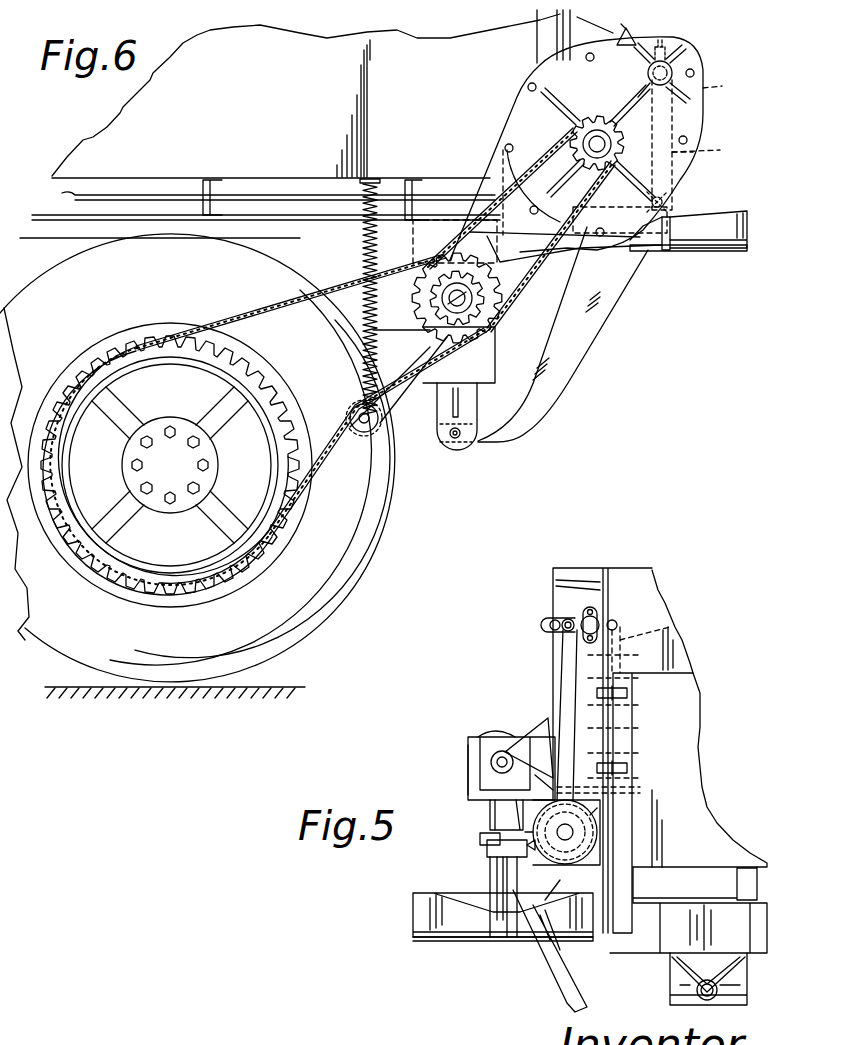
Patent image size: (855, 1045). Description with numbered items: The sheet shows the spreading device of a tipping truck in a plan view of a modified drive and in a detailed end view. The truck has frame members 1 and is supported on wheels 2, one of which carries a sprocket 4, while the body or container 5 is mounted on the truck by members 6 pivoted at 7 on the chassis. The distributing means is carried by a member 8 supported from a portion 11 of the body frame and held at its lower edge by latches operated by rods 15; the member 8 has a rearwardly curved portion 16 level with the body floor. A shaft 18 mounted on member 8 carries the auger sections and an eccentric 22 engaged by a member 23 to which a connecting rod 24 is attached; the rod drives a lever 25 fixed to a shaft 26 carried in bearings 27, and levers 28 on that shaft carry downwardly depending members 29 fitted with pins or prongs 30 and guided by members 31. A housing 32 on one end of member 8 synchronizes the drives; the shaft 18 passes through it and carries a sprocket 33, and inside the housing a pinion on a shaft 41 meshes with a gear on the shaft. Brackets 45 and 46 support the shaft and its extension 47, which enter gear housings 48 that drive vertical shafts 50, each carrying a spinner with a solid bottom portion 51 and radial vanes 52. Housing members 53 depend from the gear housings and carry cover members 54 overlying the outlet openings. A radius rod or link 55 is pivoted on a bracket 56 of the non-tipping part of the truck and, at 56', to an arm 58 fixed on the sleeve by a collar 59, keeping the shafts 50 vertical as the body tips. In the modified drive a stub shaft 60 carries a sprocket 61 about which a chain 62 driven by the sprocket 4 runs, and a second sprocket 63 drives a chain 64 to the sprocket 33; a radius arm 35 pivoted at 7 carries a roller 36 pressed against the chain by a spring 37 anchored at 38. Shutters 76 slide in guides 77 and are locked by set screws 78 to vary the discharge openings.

In FIG. 6, the frame members 1 is at (480, 356).
In FIG. 5, the frame members 1 is at (672, 995).
In FIG. 6, the wheels 2 is at (300, 635).
In FIG. 6, the sprocket 4 is at (258, 380).
In FIG. 6, the body or container 5 is at (333, 48).
In FIG. 5, the body or container 5 is at (690, 732).
In FIG. 6, the members 6 is at (413, 245).
In FIG. 5, the members 6 is at (678, 968).
In FIG. 5, the pivot 7 is at (710, 1000).
In FIG. 6, the member 8 is at (603, 20).
In FIG. 5, the member 8 is at (553, 640).
In FIG. 6, the portion of the body frame 11 is at (540, 42).
In FIG. 5, the portion of the body frame 11 is at (635, 850).
In FIG. 6, the rods 15 is at (75, 194).
In FIG. 5, the curved portion 16 is at (497, 880).
In FIG. 6, the shaft 18 is at (598, 138).
In FIG. 5, the shaft 18 is at (568, 842).
In FIG. 5, the eccentric 22 is at (562, 842).
In FIG. 5, the member 23 is at (592, 828).
In FIG. 5, the connecting rod 24 is at (563, 663).
In FIG. 5, the lever 25 is at (548, 624).
In FIG. 5, the shaft 26 is at (568, 618).
In FIG. 5, the bearings 27 is at (598, 610).
In FIG. 5, the levers 28 is at (616, 622).
In FIG. 5, the downwardly depending members 29 is at (670, 627).
In FIG. 5, the pins or prongs 30 is at (630, 728).
In FIG. 5, the members 31 is at (622, 790).
In FIG. 6, the housing 32 is at (683, 118).
In FIG. 5, the housing 32 is at (495, 733).
In FIG. 6, the sprocket 33 is at (586, 168).
In FIG. 6, the radius arm 35 is at (382, 420).
In FIG. 6, the roller 36 is at (380, 430).
In FIG. 6, the spring 37 is at (363, 240).
In FIG. 6, the anchor point 38 is at (372, 179).
In FIG. 6, the shaft 41 is at (725, 87).
In FIG. 6, the bracket 45 is at (628, 40).
In FIG. 5, the bracket 46 is at (540, 725).
In FIG. 5, the extension of the shaft 47 is at (492, 763).
In FIG. 5, the gear housings 48 is at (468, 752).
In FIG. 6, the vertical shaft 50 is at (667, 228).
In FIG. 5, the vertical shaft 50 is at (493, 905).
In FIG. 6, the bottom portion 51 is at (710, 252).
In FIG. 5, the bottom portion 51 is at (430, 941).
In FIG. 6, the vanes 52 is at (735, 215).
In FIG. 5, the vanes 52 is at (413, 907).
In FIG. 5, the housing members 53 is at (490, 815).
In FIG. 5, the cover member 54 is at (487, 850).
In FIG. 6, the radius rod or link 55 is at (580, 350).
In FIG. 5, the radius rod or link 55 is at (548, 985).
In FIG. 6, the bracket 56 is at (641, 199).
In FIG. 6, the pivot 56' is at (441, 416).
In FIG. 6, the arm 58 is at (709, 153).
In FIG. 6, the collar 59 is at (690, 66).
In FIG. 6, the stub shaft 60 is at (418, 300).
In FIG. 6, the sprocket 61 is at (420, 338).
In FIG. 6, the chain 62 is at (235, 323).
In FIG. 6, the second sprocket 63 is at (482, 300).
In FIG. 6, the chain 64 is at (557, 262).
In FIG. 5, the shutter 76 is at (527, 848).
In FIG. 5, the guides 77 is at (548, 787).
In FIG. 5, the set screw 78 is at (480, 838).